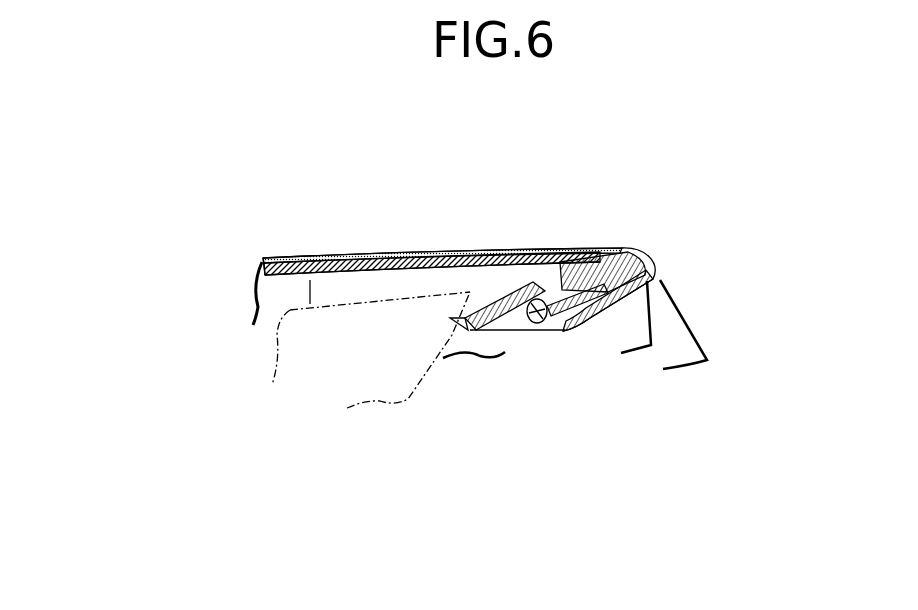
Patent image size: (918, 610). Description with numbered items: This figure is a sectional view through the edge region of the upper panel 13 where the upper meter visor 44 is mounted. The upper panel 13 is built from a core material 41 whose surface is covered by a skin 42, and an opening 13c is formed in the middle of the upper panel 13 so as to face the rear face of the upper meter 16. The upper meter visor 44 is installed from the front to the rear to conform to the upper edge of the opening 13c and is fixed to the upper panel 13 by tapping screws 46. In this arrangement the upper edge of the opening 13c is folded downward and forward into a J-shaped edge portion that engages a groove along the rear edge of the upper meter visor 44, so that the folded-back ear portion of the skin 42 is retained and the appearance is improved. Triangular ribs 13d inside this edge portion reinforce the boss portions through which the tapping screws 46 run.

The upper panel 13 is at (402, 244).
The opening 13c is at (645, 283).
The triangular ribs 13d is at (570, 275).
The upper meter 16 is at (305, 262).
The core material 41 is at (368, 277).
The skin 42 is at (346, 255).
The upper meter visor 44 is at (503, 300).
The tapping screws 46 is at (547, 334).